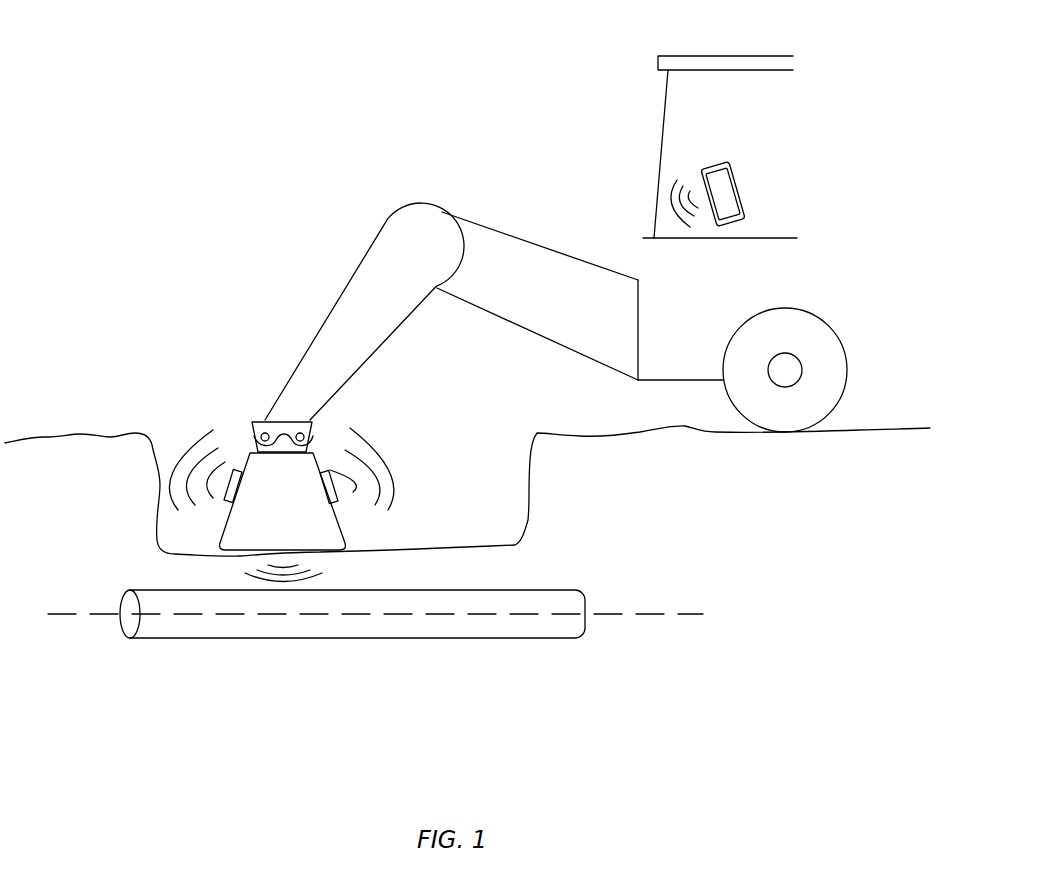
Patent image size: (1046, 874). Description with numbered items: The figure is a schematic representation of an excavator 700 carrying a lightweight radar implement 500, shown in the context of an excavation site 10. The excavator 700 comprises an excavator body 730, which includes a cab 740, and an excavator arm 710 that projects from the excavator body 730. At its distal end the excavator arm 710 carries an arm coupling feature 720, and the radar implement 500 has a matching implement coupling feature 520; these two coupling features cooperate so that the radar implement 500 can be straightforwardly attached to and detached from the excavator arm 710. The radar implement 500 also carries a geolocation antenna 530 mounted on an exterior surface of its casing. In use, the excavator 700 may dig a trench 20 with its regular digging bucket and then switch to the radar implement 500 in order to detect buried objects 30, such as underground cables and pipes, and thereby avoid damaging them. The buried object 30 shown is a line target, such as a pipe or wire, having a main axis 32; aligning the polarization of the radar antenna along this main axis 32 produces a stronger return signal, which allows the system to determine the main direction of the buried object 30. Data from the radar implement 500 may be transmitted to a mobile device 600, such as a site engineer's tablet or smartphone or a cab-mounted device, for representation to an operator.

The excavation site 10 is at (227, 98).
The trench 20 is at (537, 468).
The buried objects 30 is at (497, 638).
The main axis 32 is at (102, 615).
The radar implement 500 is at (237, 462).
The implement coupling feature 520 is at (275, 430).
The geolocation antenna 530 is at (327, 455).
The mobile device 600 is at (695, 172).
The excavator 700 is at (726, 55).
The excavator arm 710 is at (357, 270).
The arm coupling feature 720 is at (288, 418).
The excavator body 730 is at (686, 280).
The cab 740 is at (700, 102).